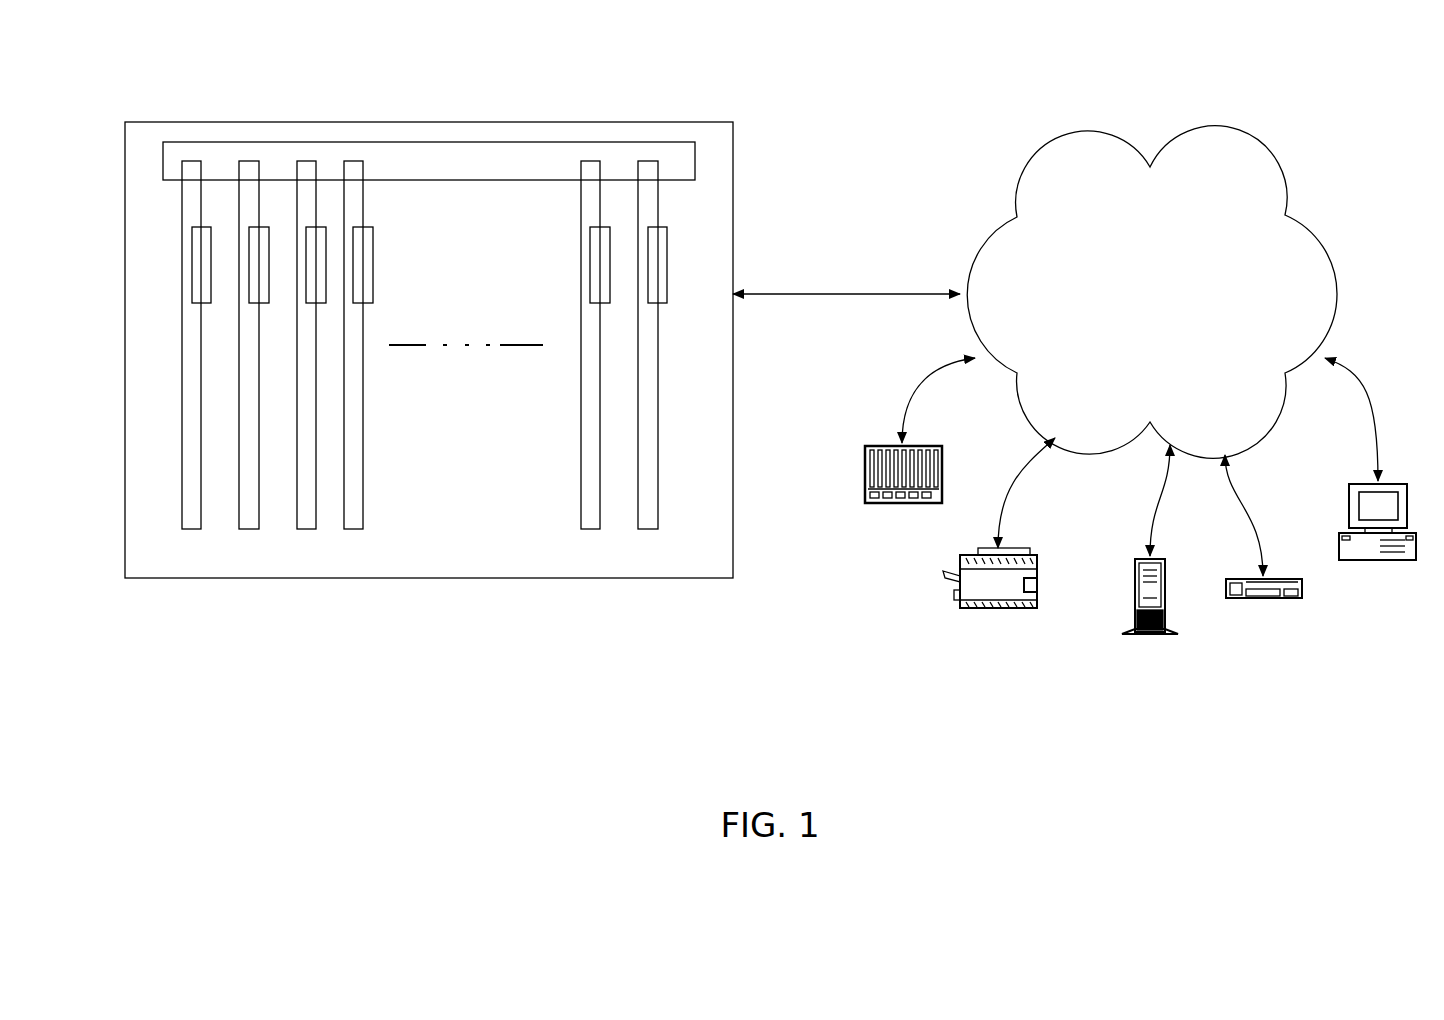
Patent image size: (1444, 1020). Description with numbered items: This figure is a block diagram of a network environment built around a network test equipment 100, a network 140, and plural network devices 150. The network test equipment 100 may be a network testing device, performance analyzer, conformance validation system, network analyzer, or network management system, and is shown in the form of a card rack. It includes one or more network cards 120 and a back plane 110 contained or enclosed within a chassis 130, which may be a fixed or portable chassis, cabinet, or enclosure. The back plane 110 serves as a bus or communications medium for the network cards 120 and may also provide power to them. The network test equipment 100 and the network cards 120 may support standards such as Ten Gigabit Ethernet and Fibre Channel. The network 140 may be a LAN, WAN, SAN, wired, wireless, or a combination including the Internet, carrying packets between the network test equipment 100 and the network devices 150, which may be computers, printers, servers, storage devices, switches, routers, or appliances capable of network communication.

The network test equipment 100 is at (236, 122).
The back plane 110 is at (504, 142).
The network cards 120 is at (164, 530).
The chassis 130 is at (733, 245).
The network 140 is at (1152, 292).
The network devices 150 is at (1140, 527).